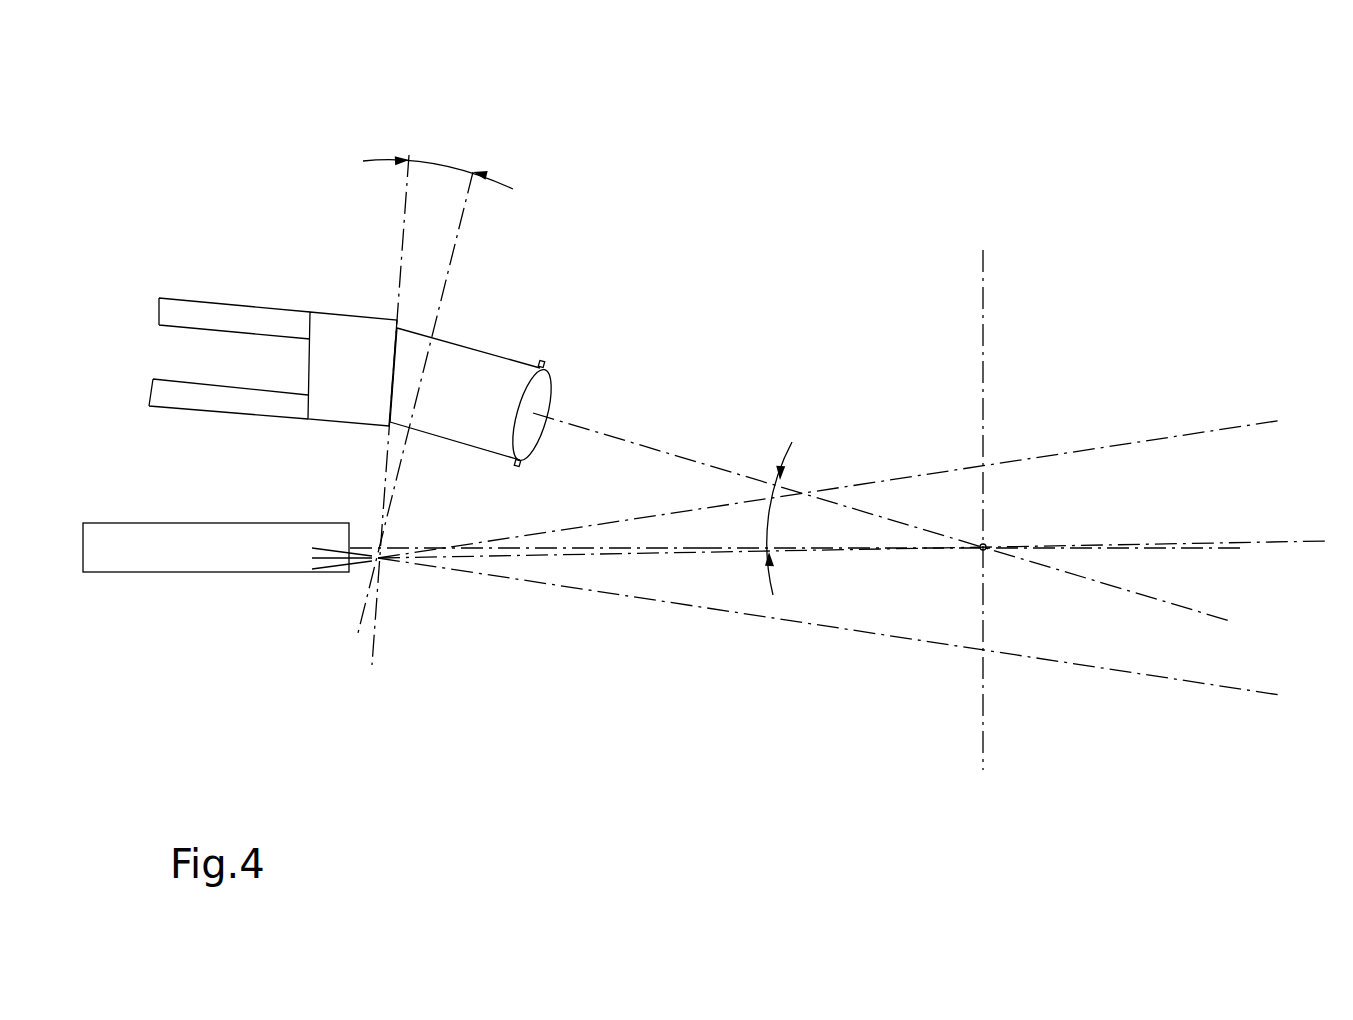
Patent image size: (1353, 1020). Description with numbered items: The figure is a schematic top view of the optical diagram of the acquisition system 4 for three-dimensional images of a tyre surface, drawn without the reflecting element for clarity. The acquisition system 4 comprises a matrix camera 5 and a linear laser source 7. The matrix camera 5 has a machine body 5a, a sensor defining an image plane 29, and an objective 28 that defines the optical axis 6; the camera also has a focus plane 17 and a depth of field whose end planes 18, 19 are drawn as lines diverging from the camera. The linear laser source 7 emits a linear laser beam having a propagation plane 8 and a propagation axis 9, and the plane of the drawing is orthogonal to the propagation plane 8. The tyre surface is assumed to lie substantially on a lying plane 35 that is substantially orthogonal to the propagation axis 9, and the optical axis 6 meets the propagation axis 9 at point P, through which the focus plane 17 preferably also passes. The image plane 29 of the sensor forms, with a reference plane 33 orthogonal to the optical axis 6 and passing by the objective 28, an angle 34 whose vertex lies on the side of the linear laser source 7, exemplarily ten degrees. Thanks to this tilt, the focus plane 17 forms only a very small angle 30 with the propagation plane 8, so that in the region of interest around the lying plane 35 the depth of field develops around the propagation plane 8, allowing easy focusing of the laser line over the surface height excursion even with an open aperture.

The acquisition system 4 is at (141, 133).
The matrix camera 5 is at (321, 288).
The machine body 5a is at (360, 340).
The optical axis 6 is at (625, 440).
The linear laser source 7 is at (190, 555).
The propagation plane 8 is at (1217, 552).
The propagation axis 9 is at (558, 548).
The focus plane 17 is at (1305, 543).
The end plane of the depth of field 18 is at (1186, 437).
The end plane of the depth of field 19 is at (1131, 672).
The objective 28 is at (478, 350).
The image plane 29 is at (368, 650).
The angle 30 is at (768, 520).
The reference plane 33 is at (453, 250).
The angle 34 is at (443, 165).
The lying plane 35 is at (983, 345).
The point P is at (985, 552).